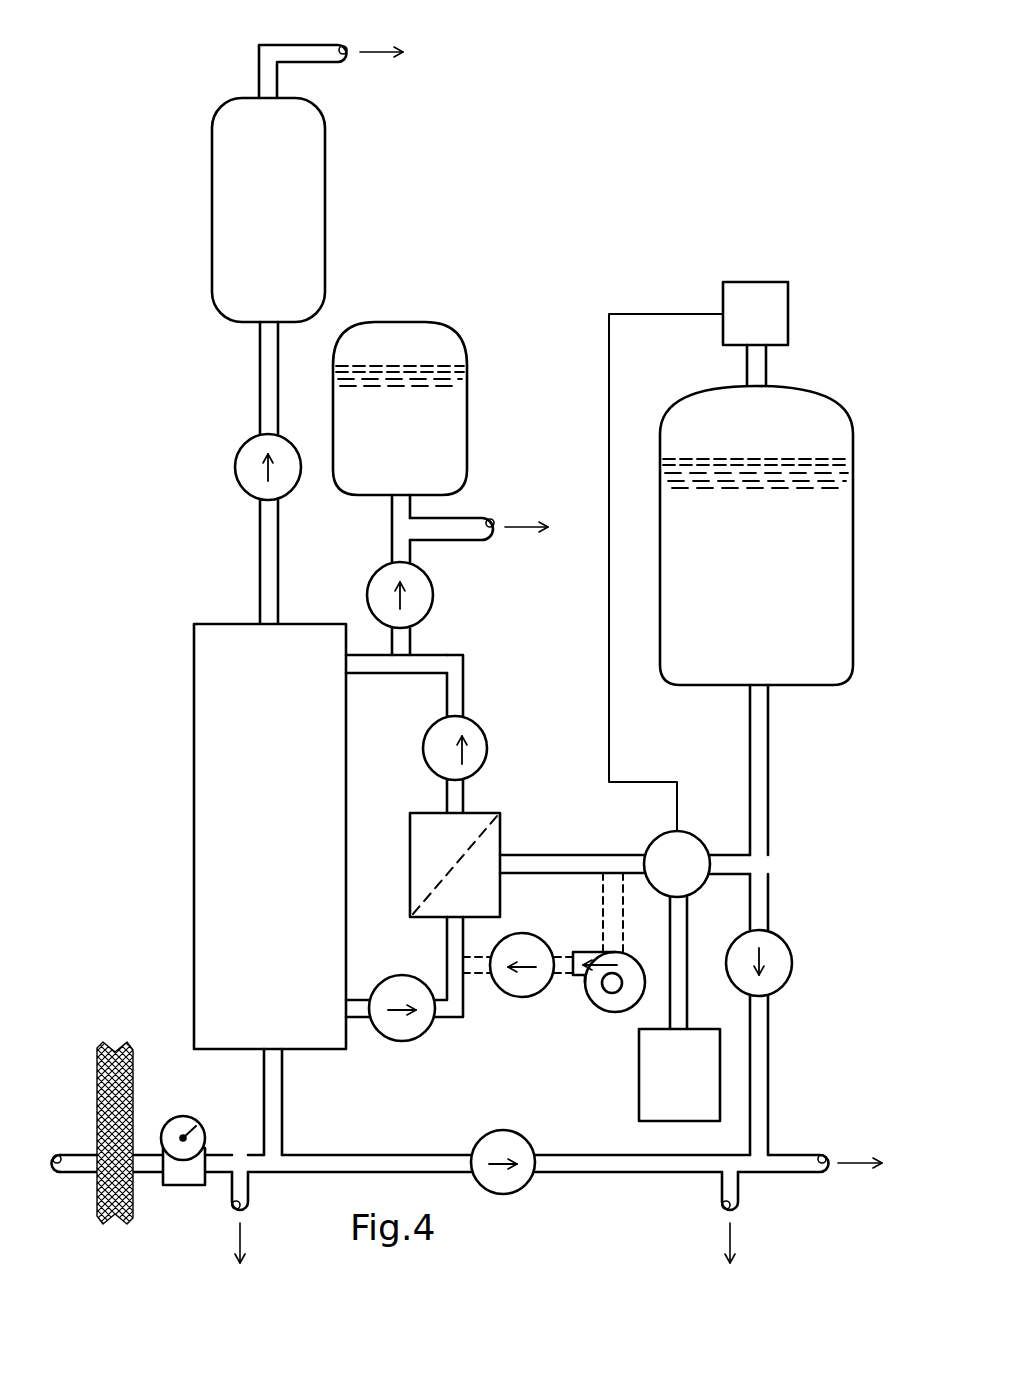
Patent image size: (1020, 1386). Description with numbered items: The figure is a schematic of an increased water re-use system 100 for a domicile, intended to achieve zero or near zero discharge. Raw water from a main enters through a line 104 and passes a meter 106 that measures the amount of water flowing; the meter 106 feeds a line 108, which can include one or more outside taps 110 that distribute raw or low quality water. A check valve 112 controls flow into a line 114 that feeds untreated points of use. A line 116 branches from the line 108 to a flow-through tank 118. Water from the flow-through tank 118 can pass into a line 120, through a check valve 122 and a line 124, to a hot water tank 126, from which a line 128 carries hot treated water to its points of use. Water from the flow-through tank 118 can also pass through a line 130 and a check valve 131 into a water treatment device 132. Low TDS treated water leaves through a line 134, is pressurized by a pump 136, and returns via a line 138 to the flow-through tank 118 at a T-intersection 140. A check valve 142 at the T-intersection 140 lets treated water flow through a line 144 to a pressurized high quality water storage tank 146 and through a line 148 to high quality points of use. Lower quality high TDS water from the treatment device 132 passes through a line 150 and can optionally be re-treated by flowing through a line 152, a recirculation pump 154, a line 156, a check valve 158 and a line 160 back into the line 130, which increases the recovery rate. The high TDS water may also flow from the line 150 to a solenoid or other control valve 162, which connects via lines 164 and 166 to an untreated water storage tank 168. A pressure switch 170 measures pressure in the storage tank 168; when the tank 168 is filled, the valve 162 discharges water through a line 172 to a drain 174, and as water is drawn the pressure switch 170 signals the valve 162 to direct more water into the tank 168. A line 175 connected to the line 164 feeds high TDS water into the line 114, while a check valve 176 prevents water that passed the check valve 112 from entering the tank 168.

The increased water re-use system 100 is at (635, 118).
The line 104 is at (143, 1165).
The meter 106 is at (173, 1120).
The line 108 is at (213, 1163).
The outside tap 110 is at (243, 1187).
The check valve 112 is at (487, 1187).
The line 114 is at (797, 1163).
The line 116 is at (275, 1110).
The flow-through tank 118 is at (212, 802).
The line 120 is at (268, 577).
The check valve 122 is at (238, 455).
The line 124 is at (265, 360).
The hot water tank 126 is at (230, 163).
The line 128 is at (302, 52).
The line 130 is at (362, 995).
The check valve 131 is at (403, 1040).
The water treatment device 132 is at (420, 845).
The line 134 is at (448, 800).
The pump 136 is at (480, 727).
The line 138 is at (458, 682).
The T-intersection 140 is at (402, 668).
The check valve 142 is at (372, 605).
The line 144 is at (398, 542).
The pressurized high quality water storage tank 146 is at (450, 402).
The line 148 is at (455, 528).
The line 150 is at (518, 860).
The line 152 is at (607, 895).
The recirculation pump 154 is at (598, 998).
The line 156 is at (572, 953).
The check valve 158 is at (522, 998).
The line 160 is at (483, 973).
The control valve 162 is at (653, 842).
The line 164 is at (737, 864).
The line 166 is at (757, 773).
The untreated water storage tank 168 is at (822, 420).
The pressure switch 170 is at (734, 290).
The line 172 is at (680, 992).
The drain 174 is at (697, 1087).
The line 175 is at (764, 906).
The check valve 176 is at (793, 964).